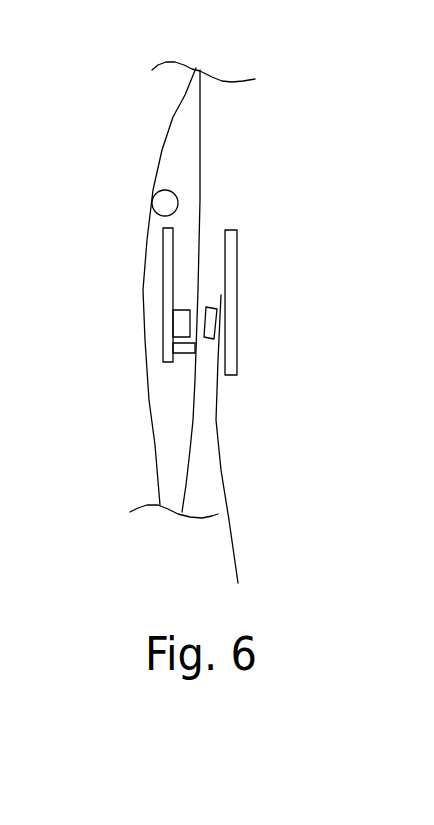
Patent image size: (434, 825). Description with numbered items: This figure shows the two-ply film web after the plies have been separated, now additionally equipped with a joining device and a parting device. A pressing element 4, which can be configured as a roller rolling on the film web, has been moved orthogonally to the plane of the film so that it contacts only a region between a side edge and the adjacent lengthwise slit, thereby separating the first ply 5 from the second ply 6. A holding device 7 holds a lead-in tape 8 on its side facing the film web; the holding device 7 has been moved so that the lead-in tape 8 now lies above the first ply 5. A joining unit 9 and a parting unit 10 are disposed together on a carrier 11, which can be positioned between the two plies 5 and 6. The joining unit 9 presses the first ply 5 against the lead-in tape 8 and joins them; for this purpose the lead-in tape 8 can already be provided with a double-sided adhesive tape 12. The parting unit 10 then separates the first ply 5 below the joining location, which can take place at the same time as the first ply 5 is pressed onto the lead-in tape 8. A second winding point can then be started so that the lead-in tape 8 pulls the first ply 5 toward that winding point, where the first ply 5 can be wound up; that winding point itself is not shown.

The pressing element 4 is at (163, 203).
The first ply 5 is at (198, 163).
The second ply 6 is at (148, 402).
The holding device 7 is at (230, 263).
The lead-in tape 8 is at (225, 497).
The joining unit 9 is at (180, 322).
The parting unit 10 is at (180, 348).
The carrier 11 is at (168, 272).
The double-sided adhesive tape 12 is at (212, 323).